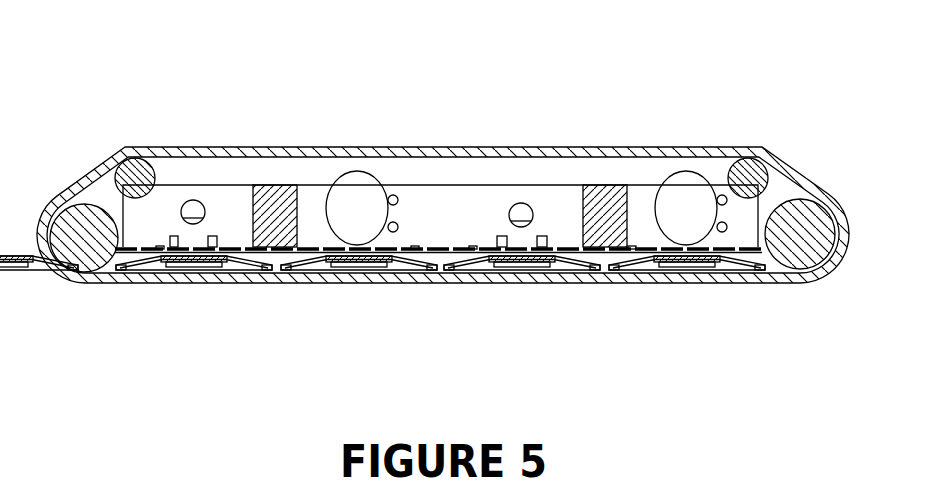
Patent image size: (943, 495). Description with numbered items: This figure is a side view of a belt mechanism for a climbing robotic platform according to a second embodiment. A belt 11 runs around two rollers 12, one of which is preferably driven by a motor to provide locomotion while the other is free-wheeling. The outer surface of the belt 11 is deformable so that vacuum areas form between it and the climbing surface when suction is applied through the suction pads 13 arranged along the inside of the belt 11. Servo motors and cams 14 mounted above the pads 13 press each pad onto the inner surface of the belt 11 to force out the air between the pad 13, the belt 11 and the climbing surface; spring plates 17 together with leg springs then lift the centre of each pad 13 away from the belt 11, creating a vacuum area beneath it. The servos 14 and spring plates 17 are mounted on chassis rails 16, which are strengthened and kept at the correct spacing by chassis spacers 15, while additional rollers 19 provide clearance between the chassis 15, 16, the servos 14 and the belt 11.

The belt 11 is at (108, 283).
The rollers 12 is at (73, 257).
The suction pad 13 is at (148, 262).
The servo motors and cams 14 is at (360, 195).
The chassis spacers 15 is at (285, 215).
The chassis rails 16 is at (230, 232).
The spring plates 17 is at (160, 240).
The additional rollers 19 is at (127, 178).